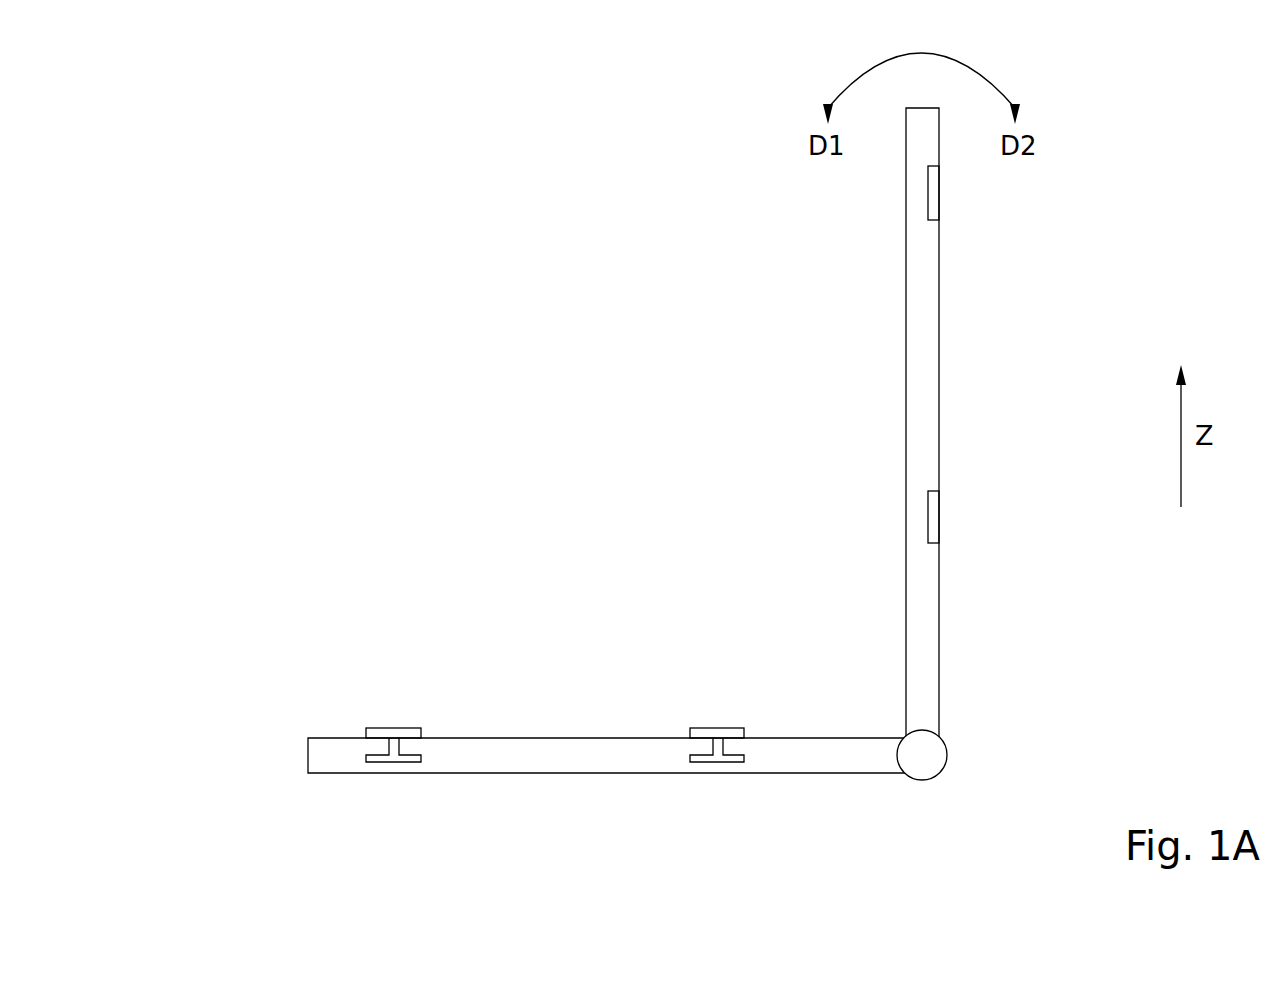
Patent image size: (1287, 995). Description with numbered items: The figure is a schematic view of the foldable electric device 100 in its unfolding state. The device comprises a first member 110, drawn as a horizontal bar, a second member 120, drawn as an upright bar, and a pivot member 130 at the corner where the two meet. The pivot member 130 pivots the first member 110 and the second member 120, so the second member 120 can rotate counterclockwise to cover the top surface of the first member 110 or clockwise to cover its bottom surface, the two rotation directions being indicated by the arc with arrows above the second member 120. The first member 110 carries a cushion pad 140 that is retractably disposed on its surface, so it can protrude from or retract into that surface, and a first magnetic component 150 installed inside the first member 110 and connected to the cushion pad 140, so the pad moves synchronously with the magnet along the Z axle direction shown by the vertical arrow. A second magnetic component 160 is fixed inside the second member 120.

The foldable electric device 100 is at (1246, 77).
The first member 110 is at (511, 705).
The second member 120 is at (980, 223).
The pivot member 130 is at (932, 758).
The cushion pad 140 is at (733, 731).
The first magnetic component 150 is at (718, 759).
The second magnetic component 160 is at (935, 518).